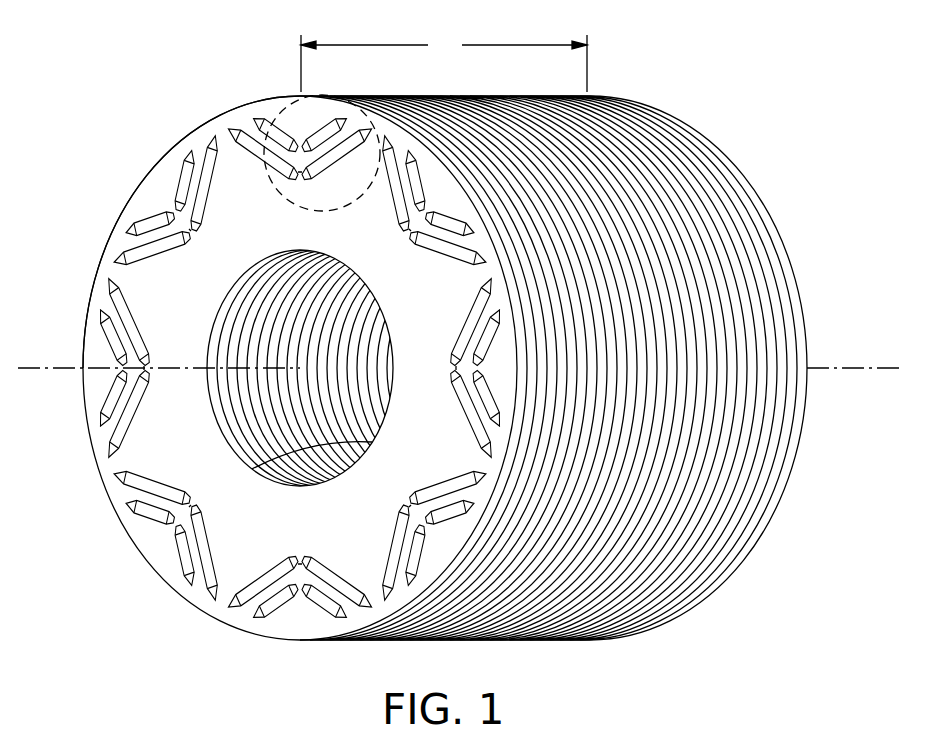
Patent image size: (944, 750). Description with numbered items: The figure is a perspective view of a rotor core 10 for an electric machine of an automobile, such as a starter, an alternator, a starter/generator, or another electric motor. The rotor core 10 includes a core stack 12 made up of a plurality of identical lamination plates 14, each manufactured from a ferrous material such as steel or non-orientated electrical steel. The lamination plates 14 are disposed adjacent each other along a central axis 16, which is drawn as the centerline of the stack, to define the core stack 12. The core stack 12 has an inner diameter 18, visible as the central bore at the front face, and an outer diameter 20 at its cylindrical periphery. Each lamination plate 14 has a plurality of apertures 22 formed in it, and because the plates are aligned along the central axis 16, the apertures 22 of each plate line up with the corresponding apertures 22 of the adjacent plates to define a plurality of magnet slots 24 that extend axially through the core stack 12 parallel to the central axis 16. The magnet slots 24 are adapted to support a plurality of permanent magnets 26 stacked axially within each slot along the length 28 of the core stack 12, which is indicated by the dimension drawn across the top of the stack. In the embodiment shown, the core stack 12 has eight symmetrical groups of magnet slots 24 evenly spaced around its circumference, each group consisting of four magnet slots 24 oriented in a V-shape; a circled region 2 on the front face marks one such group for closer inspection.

The detail region of rotor pole 2 is at (262, 92).
The rotor core 10 is at (114, 556).
The core stack 12 is at (680, 92).
The lamination plates 14 is at (708, 259).
The central axis 16 is at (850, 368).
The inner diameter 18 is at (253, 470).
The outer diameter 20 is at (148, 175).
The apertures 22 is at (254, 119).
The magnet slots 24 is at (215, 136).
The permanent magnets 26 is at (207, 177).
The length 28 is at (444, 63).